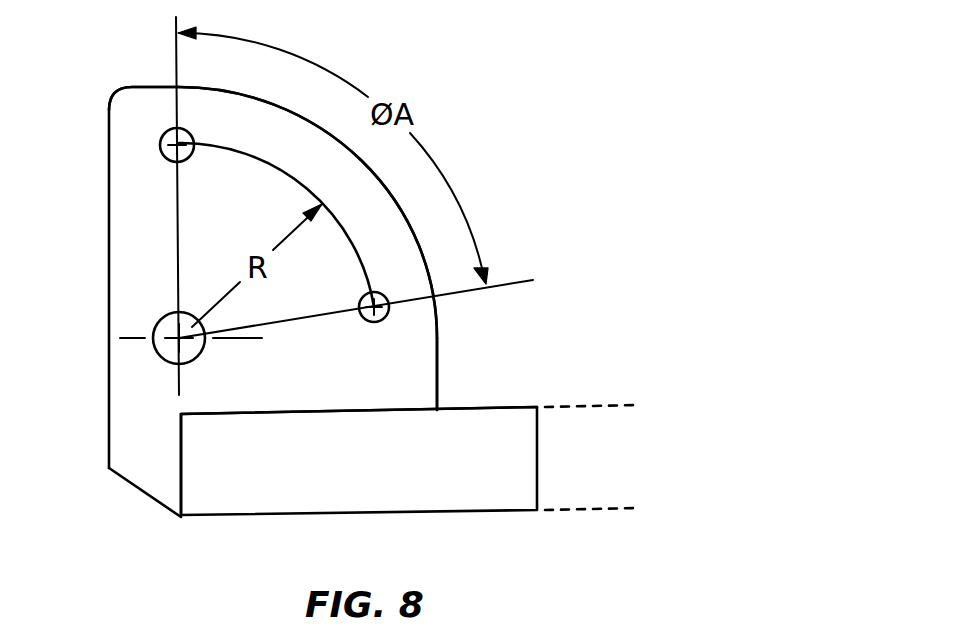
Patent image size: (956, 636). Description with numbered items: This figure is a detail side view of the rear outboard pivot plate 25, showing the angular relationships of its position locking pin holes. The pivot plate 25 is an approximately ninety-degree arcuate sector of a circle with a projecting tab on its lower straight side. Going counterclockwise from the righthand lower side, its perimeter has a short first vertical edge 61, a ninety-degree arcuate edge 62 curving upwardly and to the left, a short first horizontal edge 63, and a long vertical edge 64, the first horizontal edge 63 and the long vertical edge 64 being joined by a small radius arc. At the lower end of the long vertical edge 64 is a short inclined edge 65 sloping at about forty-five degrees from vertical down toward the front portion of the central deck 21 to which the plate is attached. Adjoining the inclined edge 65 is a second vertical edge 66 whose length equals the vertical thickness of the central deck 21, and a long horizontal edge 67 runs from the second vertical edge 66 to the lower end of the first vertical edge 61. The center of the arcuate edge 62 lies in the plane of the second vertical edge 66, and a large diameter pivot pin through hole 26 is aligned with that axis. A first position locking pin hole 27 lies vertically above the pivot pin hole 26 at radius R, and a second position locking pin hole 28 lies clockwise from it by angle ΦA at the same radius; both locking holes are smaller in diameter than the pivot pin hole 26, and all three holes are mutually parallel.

The central deck 21 is at (355, 513).
The rear outboard pivot plate 25 is at (508, 98).
The pivot pin through hole 26 is at (155, 347).
The first position locking pin hole 27 is at (160, 145).
The second position locking pin hole 28 is at (372, 322).
The first vertical edge 61 is at (439, 382).
The arcuate edge 62 is at (205, 85).
The first horizontal edge 63 is at (162, 85).
The long vertical edge 64 is at (108, 230).
The inclined edge 65 is at (145, 492).
The second vertical edge 66 is at (181, 465).
The long horizontal edge 67 is at (355, 412).